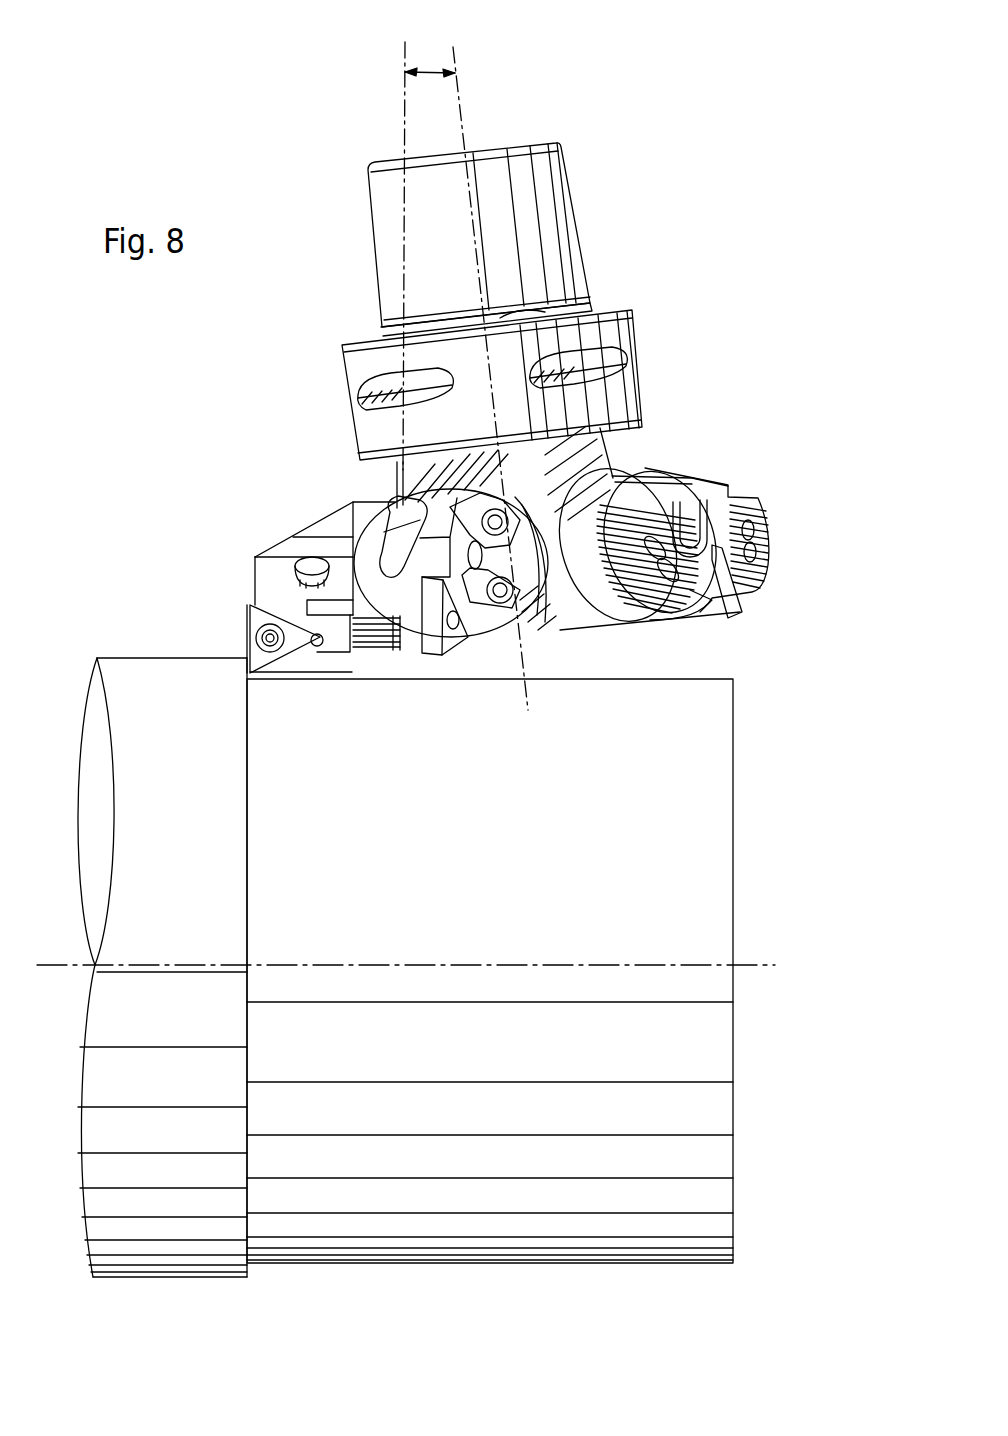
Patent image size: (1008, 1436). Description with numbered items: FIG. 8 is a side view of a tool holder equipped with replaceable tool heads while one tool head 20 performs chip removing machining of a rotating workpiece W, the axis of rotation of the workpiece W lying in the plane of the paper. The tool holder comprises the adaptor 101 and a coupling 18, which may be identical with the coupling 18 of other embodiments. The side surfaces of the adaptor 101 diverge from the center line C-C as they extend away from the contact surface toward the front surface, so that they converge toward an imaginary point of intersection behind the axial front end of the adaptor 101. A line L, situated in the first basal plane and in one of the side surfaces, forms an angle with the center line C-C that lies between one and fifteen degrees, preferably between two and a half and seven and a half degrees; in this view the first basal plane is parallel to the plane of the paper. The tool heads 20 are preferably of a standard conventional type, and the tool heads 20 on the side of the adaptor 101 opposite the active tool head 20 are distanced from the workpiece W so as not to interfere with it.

The coupling 18 is at (612, 233).
The adaptor 101 is at (612, 452).
The tool head 20 is at (293, 523).
The workpiece W is at (732, 672).
The line L is at (404, 110).
The center line C-C is at (465, 125).